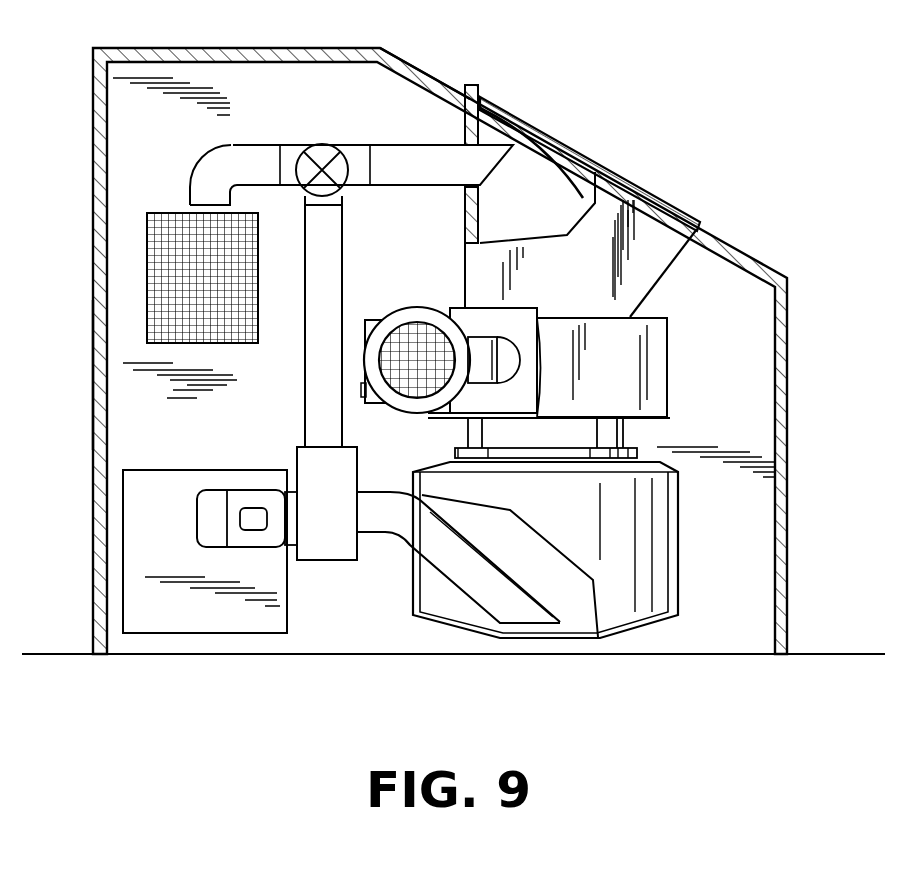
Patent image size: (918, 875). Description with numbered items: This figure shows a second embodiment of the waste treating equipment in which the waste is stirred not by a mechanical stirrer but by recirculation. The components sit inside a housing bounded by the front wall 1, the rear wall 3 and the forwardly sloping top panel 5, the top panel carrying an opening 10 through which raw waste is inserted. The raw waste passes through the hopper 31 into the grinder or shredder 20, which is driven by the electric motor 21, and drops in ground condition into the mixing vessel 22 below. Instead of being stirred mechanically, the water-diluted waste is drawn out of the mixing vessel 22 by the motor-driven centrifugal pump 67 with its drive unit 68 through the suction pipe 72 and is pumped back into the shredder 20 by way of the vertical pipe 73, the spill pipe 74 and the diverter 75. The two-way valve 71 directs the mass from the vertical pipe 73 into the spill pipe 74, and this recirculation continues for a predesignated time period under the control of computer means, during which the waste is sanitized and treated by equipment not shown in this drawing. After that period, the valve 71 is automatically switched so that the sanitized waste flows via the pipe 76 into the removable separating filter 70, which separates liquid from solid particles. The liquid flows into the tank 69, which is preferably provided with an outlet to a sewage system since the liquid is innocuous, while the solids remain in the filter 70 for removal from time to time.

The front wall 1 is at (787, 478).
The rear wall 3 is at (93, 368).
The forwardly sloping top panel 5 is at (400, 63).
The opening 10 is at (522, 120).
The grinder 20 is at (657, 388).
The electric motor 21 is at (417, 323).
The mixing vessel 22 is at (662, 575).
The hopper 31 is at (647, 215).
The motor-driven centrifugal pump 67 is at (313, 552).
The pump 68 is at (215, 500).
The tank 69 is at (133, 578).
The removable separating filter 70 is at (147, 270).
The two-way valve 71 is at (320, 143).
The suction pipe 72 is at (508, 612).
The vertical pipe 73 is at (312, 353).
The spill pipe 74 is at (423, 145).
The diverter 75 is at (573, 183).
The pipe 76 is at (208, 167).